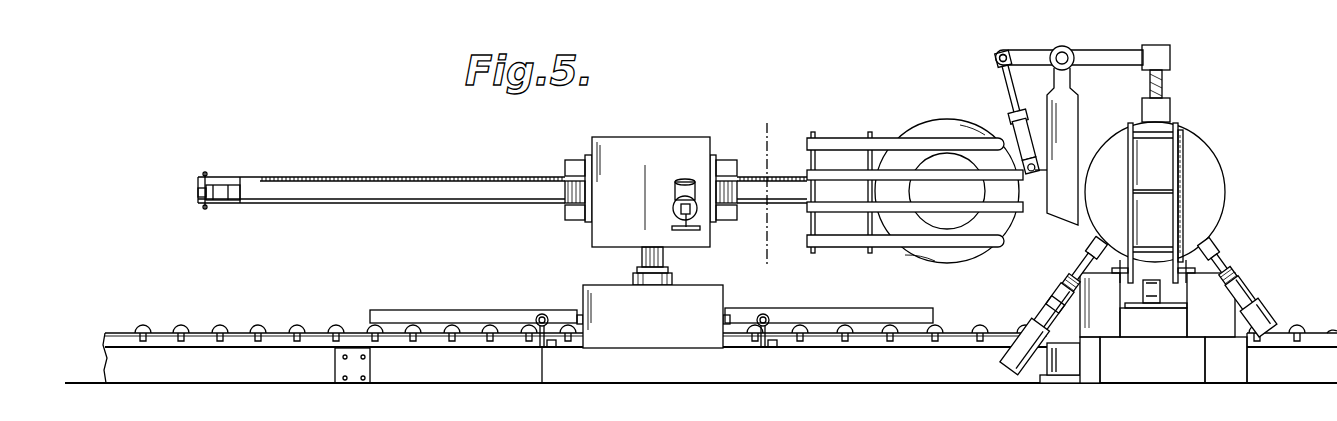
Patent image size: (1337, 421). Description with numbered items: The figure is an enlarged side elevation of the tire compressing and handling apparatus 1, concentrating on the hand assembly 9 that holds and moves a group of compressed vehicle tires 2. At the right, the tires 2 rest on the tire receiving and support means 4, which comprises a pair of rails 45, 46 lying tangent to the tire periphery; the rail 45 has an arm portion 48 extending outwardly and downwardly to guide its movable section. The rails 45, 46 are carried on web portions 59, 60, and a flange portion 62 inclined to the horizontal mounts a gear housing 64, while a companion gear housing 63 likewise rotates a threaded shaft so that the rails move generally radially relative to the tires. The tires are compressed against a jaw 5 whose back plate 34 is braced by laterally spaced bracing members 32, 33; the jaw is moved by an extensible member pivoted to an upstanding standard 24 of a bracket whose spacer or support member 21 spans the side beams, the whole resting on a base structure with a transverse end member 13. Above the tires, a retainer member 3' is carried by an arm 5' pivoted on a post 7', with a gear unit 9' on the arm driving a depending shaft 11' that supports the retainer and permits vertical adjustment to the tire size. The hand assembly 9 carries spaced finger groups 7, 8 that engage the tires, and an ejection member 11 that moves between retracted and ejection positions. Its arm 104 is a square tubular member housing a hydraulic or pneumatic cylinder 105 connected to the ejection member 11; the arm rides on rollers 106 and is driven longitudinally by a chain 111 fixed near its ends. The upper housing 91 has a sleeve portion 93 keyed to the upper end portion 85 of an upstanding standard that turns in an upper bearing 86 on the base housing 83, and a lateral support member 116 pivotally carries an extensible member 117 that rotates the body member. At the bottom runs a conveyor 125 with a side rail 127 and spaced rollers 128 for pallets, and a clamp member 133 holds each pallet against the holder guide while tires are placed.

The tire compressing and handling apparatus 1 is at (838, 68).
The vehicle tires 2 is at (972, 128).
The retainer member 3' is at (1174, 110).
The tire receiving and support means 4 is at (1228, 245).
The jaw 5 is at (1164, 190).
The arm 5' is at (1070, 44).
The finger group 7 is at (947, 179).
The post 7' is at (1079, 146).
The finger group 8 is at (792, 150).
The hand assembly 9 is at (915, 173).
The gear unit 9' is at (1173, 57).
The ejection member 11 is at (861, 177).
The shaft 11' is at (1183, 84).
The transverse end member 13 is at (1165, 375).
The spacer or support member 21 is at (1141, 312).
The upstanding standard 24 is at (1128, 301).
The bracing member 32 is at (1128, 172).
The bracing member 33 is at (1178, 196).
The back plate 34 is at (1217, 205).
The rail 45 is at (1085, 245).
The rail 46 is at (1222, 263).
The arm portion 48 is at (1022, 376).
The web portion 59 is at (1225, 320).
The web portion 60 is at (1090, 330).
The flange portion 62 is at (1070, 285).
The gear housing 63 is at (1035, 296).
The gear housing 64 is at (1268, 296).
The base housing 83 is at (724, 292).
The upper end portion 85 is at (637, 270).
The upper bearing 86 is at (665, 284).
The upper housing 91 is at (693, 136).
The sleeve portion 93 is at (640, 258).
The arm 104 is at (437, 204).
The hydraulic or pneumatic cylinder 105 is at (231, 185).
The rollers 106 is at (570, 160).
The chain 111 is at (412, 176).
The lateral support member 116 is at (693, 240).
The extensible member 117 is at (673, 185).
The conveyor 125 is at (127, 331).
The side rail 127 is at (353, 332).
The rollers 128 is at (187, 329).
The clamp member 133 is at (490, 308).